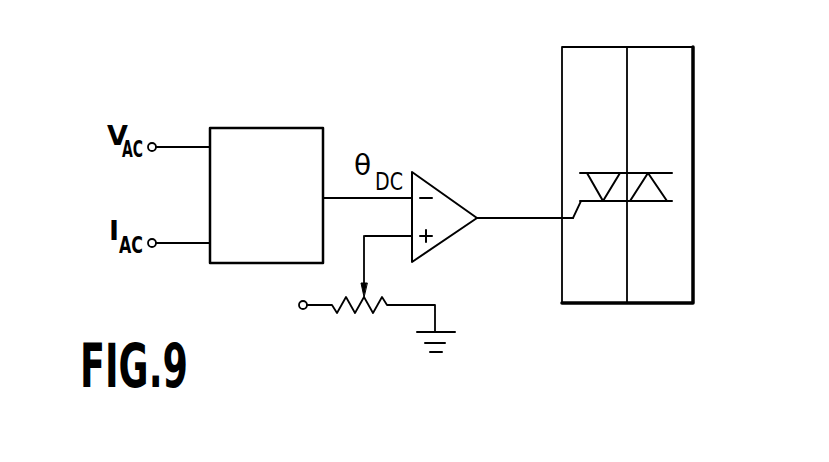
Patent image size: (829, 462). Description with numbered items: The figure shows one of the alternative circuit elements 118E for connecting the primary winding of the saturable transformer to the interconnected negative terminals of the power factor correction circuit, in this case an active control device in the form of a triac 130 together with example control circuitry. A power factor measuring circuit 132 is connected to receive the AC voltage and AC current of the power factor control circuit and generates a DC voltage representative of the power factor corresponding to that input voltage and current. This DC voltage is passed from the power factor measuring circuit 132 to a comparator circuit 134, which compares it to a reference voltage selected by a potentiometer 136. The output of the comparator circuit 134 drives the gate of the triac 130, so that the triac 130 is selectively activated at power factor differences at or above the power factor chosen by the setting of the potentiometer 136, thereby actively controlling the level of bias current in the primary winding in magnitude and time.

The circuit element 118E is at (643, 304).
The triac 130 is at (643, 173).
The power factor measuring circuit 132 is at (237, 263).
The comparator circuit 134 is at (450, 196).
The potentiometer 136 is at (385, 298).